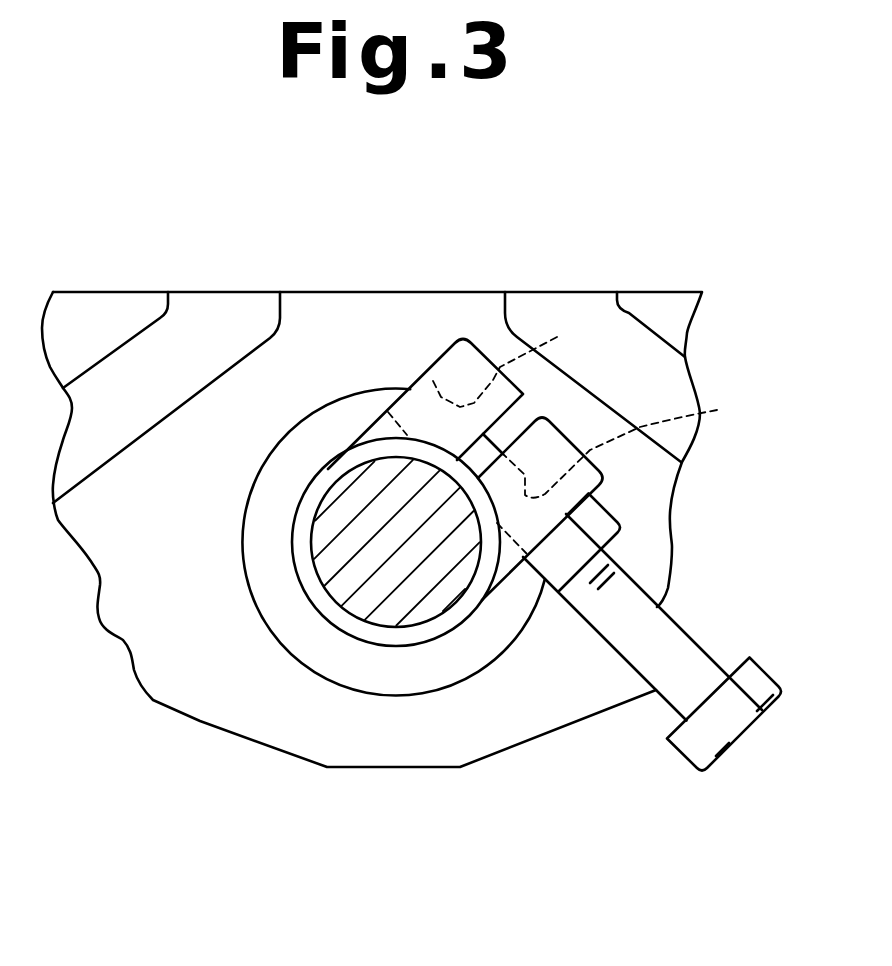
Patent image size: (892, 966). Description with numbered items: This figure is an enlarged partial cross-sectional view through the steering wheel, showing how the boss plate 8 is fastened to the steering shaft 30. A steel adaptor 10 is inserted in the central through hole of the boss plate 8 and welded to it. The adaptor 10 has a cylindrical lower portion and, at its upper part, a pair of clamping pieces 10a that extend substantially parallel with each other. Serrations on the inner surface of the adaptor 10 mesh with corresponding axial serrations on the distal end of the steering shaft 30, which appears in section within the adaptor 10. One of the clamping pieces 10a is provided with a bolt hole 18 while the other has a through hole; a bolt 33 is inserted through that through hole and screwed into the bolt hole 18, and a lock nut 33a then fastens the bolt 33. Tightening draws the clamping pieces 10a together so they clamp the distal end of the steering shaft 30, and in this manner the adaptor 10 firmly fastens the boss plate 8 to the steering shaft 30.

The boss plate 8 is at (660, 545).
The adaptor 10 is at (417, 648).
The clamping pieces 10a is at (441, 358).
The bolt hole 18 is at (612, 404).
The steering shaft 30 is at (308, 532).
The bolt 33 is at (733, 742).
The lock nut 33a is at (608, 521).